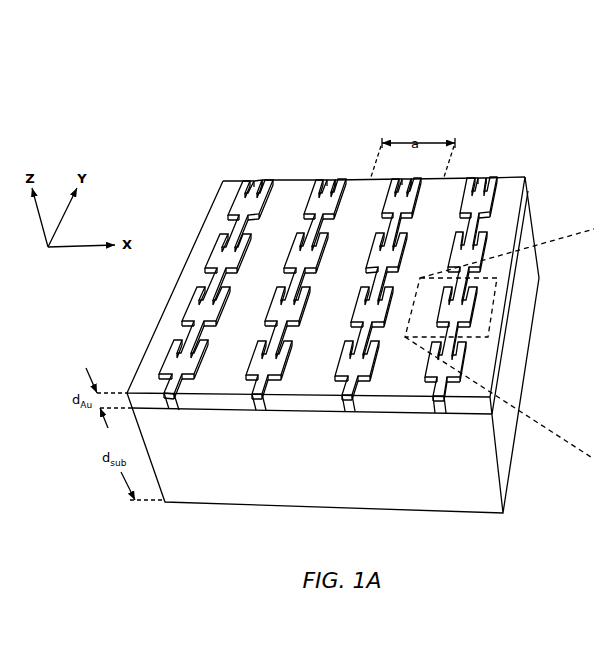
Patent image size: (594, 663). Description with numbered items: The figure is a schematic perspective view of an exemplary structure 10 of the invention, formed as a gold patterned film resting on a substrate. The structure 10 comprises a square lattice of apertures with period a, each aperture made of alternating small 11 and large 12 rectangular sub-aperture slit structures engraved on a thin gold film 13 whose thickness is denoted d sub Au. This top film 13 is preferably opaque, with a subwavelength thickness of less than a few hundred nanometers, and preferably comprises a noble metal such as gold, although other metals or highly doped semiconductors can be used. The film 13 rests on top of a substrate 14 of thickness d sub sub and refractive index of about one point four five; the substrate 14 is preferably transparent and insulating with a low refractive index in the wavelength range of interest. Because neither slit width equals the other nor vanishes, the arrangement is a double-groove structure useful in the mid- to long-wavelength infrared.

The structure 10 is at (290, 110).
The small rectangular sub-aperture slit structure 11 is at (233, 228).
The large rectangular sub-aperture slit structure 12 is at (247, 205).
The thin gold film 13 is at (162, 333).
The substrate 14 is at (185, 503).